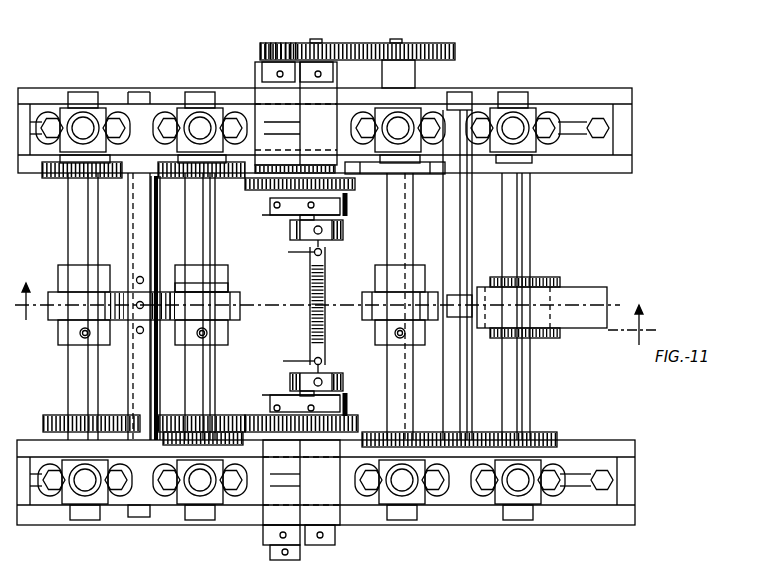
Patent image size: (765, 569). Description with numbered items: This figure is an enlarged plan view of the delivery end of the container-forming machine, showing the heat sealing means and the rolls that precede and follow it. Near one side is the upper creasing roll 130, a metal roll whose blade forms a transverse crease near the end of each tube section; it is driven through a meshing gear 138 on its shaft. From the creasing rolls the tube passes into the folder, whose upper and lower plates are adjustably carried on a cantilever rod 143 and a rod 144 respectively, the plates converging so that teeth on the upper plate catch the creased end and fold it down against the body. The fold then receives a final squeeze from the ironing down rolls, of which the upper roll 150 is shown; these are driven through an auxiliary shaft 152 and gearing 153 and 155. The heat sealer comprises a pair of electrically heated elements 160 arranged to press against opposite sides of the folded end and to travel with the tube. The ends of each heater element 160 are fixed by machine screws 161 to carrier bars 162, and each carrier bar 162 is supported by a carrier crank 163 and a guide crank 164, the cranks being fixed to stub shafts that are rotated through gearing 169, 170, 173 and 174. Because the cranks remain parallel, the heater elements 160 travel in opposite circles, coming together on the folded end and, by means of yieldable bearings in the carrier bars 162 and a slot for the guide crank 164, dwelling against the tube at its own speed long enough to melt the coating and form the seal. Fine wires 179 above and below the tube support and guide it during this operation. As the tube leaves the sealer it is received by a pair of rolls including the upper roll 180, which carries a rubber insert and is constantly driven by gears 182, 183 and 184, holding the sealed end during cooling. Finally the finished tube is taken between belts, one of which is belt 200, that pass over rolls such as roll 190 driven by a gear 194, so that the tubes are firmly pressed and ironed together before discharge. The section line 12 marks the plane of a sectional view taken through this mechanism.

The section line 12- 12 is at (339, 299).
The upper creasing roll 130 is at (144, 305).
The meshing gear 138 is at (62, 180).
The cantilever rod 143 is at (138, 198).
The rod 144 is at (140, 394).
The upper ironing down roll 150 is at (192, 290).
The auxiliary shaft 152 is at (160, 366).
The gearing 153 is at (160, 416).
The gearing 155 is at (213, 415).
The electrically heated element 160 is at (326, 302).
The machine screw 161 is at (323, 243).
The carrier bar 162 is at (292, 232).
The carrier crank 163 is at (278, 217).
The guide crank 164 is at (346, 205).
The gearing 169 is at (180, 182).
The gearing 170 is at (336, 172).
The gearing 173 is at (262, 215).
The gearing 174 is at (355, 188).
The fine wire 179 is at (458, 256).
The upper roll 180 is at (396, 315).
The gear 182 is at (298, 42).
The gear 183 is at (455, 50).
The gear 184 is at (388, 432).
The roll 190 is at (536, 278).
The gear 194 is at (548, 436).
The belt 200 is at (578, 292).